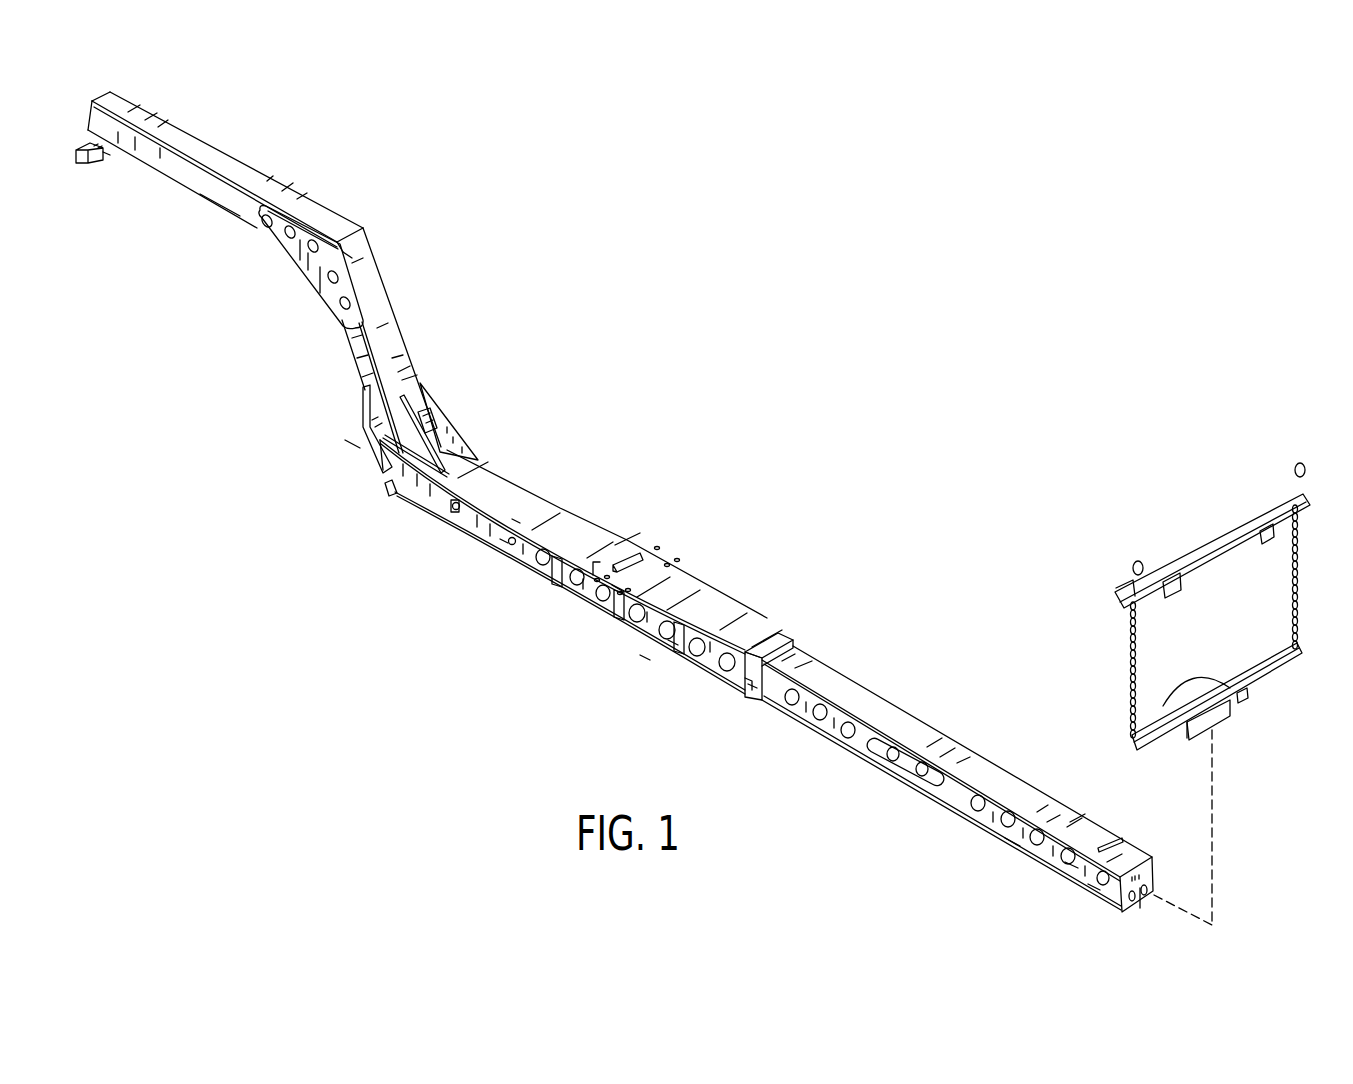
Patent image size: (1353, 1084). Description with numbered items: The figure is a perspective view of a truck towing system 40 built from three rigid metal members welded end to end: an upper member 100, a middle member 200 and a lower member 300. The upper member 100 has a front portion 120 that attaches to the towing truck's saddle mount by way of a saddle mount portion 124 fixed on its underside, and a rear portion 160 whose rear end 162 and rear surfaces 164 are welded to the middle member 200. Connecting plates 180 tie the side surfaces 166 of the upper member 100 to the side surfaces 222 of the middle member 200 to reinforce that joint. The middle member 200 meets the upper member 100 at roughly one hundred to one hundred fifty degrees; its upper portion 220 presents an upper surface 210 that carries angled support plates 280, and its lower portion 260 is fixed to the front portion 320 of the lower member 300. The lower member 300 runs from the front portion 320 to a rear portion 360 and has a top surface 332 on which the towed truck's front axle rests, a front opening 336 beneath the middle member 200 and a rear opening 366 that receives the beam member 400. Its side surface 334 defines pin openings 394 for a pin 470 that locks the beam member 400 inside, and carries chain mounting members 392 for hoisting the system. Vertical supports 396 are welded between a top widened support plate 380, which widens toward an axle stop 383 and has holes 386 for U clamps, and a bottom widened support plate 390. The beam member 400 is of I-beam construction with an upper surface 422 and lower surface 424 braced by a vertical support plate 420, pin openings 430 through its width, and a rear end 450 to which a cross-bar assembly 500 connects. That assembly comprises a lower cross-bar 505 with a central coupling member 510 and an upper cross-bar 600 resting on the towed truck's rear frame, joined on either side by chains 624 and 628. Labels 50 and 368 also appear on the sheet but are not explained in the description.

The truck towing system 40 is at (730, 242).
The boom assembly 50 is at (853, 545).
The upper member 100 is at (283, 142).
The front portion 120 is at (128, 112).
The saddle mount portion 124 is at (86, 165).
The rear portion 160 is at (340, 233).
The rear end 162 is at (345, 242).
The rear surfaces 164 is at (350, 250).
The side surfaces 166 is at (217, 200).
The connecting plates 180 is at (300, 262).
The middle member 200 is at (487, 330).
The upper portion 220 is at (368, 285).
The side surfaces 222 is at (343, 338).
The upper surface 210 is at (405, 372).
The lower portion 260 is at (422, 398).
The angled support plates 280 is at (370, 415).
The lower member 300 is at (668, 485).
The front portion 320 is at (417, 495).
The front opening 336 is at (336, 447).
The pin openings 394 is at (500, 540).
The top surface 332 is at (627, 540).
The axle stop 383 is at (630, 560).
The holes 386 is at (667, 565).
The chain mounting members 392 is at (457, 510).
The pin 470 is at (513, 545).
The side surface 334 is at (535, 560).
The bottom widened support plate 390 is at (594, 562).
The top widened support plate 380 is at (618, 590).
The vertical supports 396 is at (673, 643).
The rear portion 360 is at (750, 625).
The rear opening 366 is at (787, 655).
The sleeve bottom 368 is at (750, 680).
The beam member 400 is at (933, 733).
The vertical support plate 420 is at (867, 747).
The upper surface 422 is at (1080, 817).
The lower surface 424 is at (1013, 840).
The pin openings 430 is at (1093, 887).
The rear end 450 is at (1153, 873).
The cross-bar assembly 500 is at (1140, 508).
The upper cross-bar 600 is at (1230, 520).
The chains 624 is at (1133, 648).
The chains 628 is at (1297, 590).
The lower cross-bar 505 is at (1252, 676).
The coupling member 510 is at (1230, 720).